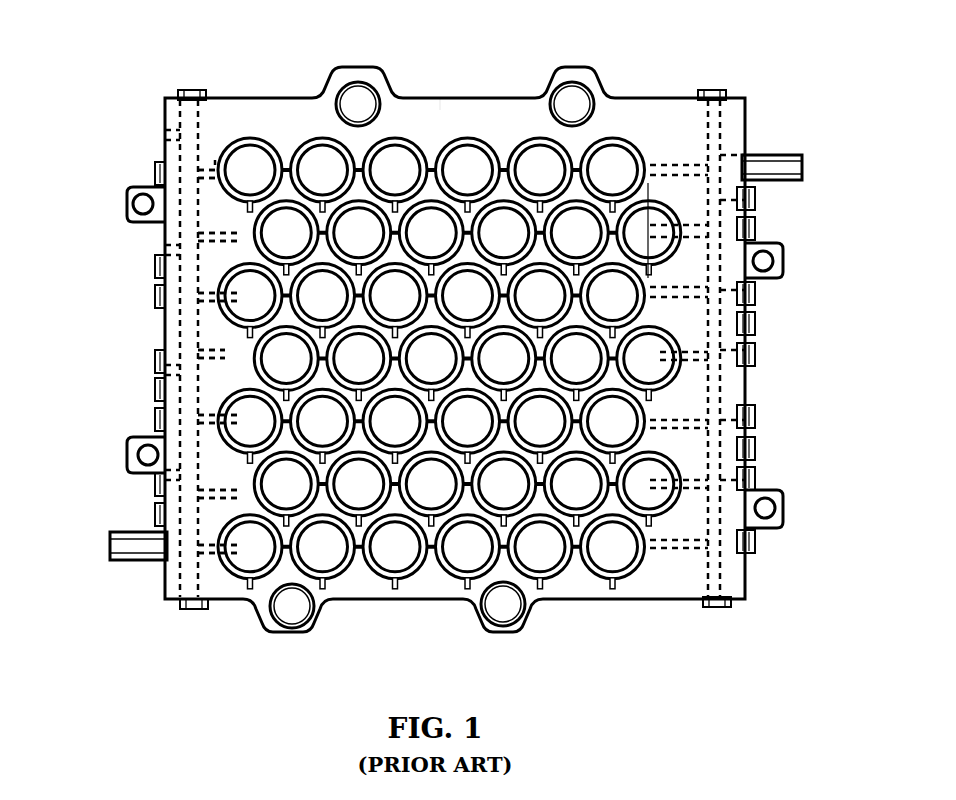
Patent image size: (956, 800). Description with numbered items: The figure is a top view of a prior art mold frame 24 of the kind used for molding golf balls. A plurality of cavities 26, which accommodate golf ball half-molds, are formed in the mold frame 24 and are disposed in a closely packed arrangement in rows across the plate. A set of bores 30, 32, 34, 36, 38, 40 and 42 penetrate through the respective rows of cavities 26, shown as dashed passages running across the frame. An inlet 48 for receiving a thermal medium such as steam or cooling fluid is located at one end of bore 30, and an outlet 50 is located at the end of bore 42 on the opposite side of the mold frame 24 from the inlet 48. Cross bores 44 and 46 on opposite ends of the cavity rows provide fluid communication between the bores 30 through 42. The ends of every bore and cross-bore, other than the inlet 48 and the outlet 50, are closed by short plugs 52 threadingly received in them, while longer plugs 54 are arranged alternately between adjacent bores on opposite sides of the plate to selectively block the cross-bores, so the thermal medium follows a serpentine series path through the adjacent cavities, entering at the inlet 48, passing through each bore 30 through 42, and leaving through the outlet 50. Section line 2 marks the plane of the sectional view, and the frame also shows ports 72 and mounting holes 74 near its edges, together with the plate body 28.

The section line 2- 2 is at (650, 190).
The mold frame 24 is at (150, 140).
The cavities 26 is at (322, 160).
The plate body 28 is at (440, 110).
The bore 30 is at (212, 168).
The bore 32 is at (212, 240).
The bore 34 is at (232, 300).
The bore 36 is at (220, 356).
The bore 38 is at (218, 418).
The bore 40 is at (205, 515).
The bore 42 is at (212, 555).
The cross bore 44 is at (188, 208).
The cross bore 46 is at (712, 266).
The inlet 48 is at (772, 168).
The outlet 50 is at (130, 546).
The short plugs 52 is at (190, 92).
The longer plugs 54 is at (160, 266).
The port 72 is at (360, 100).
The mounting hole 74 is at (128, 455).